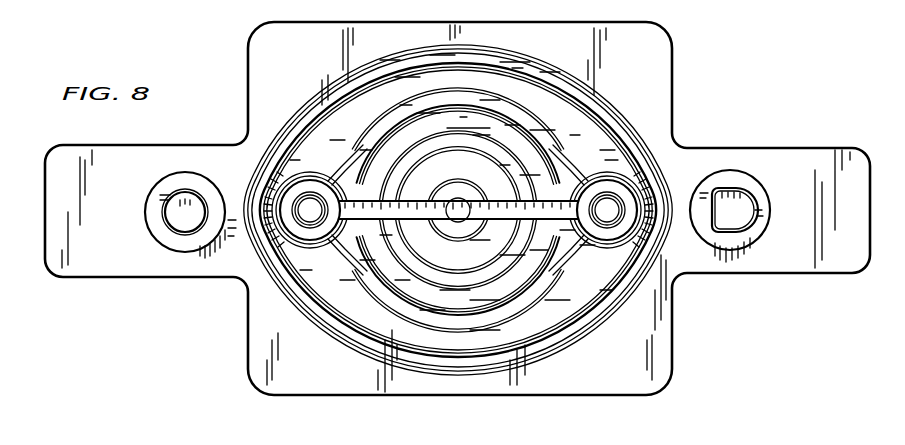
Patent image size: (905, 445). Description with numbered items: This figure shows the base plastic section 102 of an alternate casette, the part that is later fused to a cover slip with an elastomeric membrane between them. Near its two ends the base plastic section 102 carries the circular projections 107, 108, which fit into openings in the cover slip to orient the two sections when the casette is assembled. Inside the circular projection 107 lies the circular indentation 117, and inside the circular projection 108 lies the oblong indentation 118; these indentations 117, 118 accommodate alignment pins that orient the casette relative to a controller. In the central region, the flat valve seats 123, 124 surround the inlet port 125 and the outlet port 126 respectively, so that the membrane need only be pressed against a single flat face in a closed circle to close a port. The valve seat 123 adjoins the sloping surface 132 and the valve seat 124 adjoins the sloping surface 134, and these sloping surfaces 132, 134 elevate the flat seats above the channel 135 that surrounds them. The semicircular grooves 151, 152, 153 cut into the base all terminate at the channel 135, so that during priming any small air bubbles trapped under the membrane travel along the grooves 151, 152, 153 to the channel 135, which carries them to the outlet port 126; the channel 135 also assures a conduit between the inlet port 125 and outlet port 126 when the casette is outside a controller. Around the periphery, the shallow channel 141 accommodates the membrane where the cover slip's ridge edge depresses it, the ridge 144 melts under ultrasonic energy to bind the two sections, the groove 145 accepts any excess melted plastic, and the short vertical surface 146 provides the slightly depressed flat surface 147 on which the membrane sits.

The base plastic section 102 is at (118, 280).
The circular projection 107 is at (177, 245).
The circular projection 108 is at (728, 180).
The circular indentation 117 is at (187, 200).
The oblong indentation 118 is at (748, 192).
The valve seat 123 is at (293, 284).
The valve seat 124 is at (628, 196).
The inlet port 125 is at (307, 196).
The outlet port 126 is at (608, 198).
The sloping surface 132 is at (300, 312).
The sloping surface 134 is at (612, 248).
The channel 135 is at (318, 170).
The shallow channel 141 is at (533, 316).
The ridge 144 is at (343, 323).
The groove 145 is at (373, 348).
The short vertical surface 146 is at (400, 358).
The flat surface 147 is at (478, 378).
The semicircular groove 151 is at (424, 231).
The semicircular groove 152 is at (500, 152).
The semicircular groove 153 is at (475, 108).